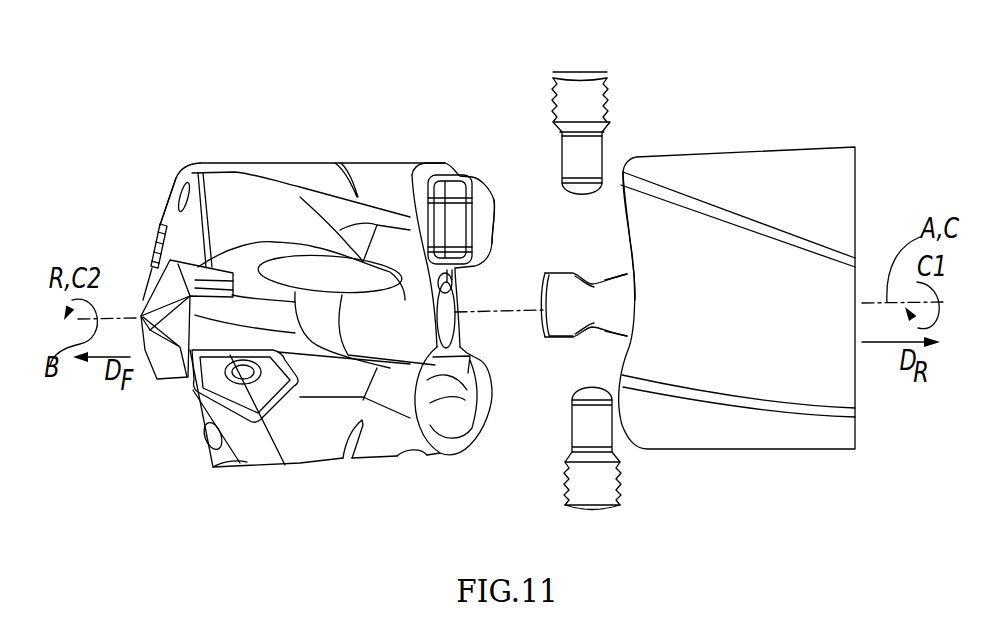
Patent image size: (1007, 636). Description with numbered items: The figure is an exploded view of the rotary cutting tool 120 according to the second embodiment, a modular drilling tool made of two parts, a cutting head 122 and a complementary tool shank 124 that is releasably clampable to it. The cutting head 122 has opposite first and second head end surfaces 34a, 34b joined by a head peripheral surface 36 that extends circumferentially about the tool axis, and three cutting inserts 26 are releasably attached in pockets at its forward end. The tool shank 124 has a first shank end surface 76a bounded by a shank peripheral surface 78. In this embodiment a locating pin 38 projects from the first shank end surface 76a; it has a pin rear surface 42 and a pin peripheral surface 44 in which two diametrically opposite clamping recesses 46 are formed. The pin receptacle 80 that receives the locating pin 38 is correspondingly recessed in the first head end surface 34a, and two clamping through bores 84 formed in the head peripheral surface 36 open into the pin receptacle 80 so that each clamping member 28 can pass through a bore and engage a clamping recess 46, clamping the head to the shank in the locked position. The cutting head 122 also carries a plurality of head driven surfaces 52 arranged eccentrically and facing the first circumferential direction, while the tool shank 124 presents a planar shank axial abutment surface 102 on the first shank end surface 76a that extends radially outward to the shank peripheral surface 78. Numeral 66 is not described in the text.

The rotary cutting tool 120 is at (805, 40).
The cutting head 122 is at (302, 490).
The tool shank 124 is at (752, 492).
The cutting insert 26 is at (158, 245).
The clamping member 28 is at (600, 100).
The first head end surface 34a is at (506, 205).
The second head end surface 34b is at (125, 236).
The head peripheral surface 36 is at (262, 192).
The locating pin 38 is at (542, 378).
The pin rear surface 42 is at (546, 318).
The pin peripheral surface 44 is at (567, 312).
The clamping recess 46 is at (585, 268).
The head driven surface 52 is at (458, 180).
The clamping member 66 is at (413, 163).
The first shank end surface 76a is at (612, 240).
The shank peripheral surface 78 is at (762, 183).
The pin receptacle 80 is at (455, 290).
The clamping through bore 84 is at (358, 163).
The shank axial abutment surface 102 is at (618, 215).